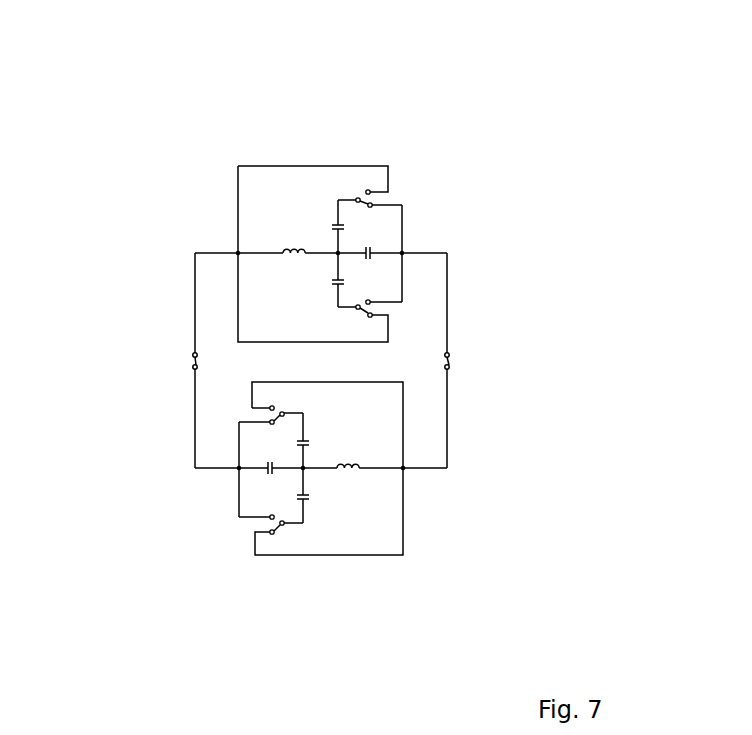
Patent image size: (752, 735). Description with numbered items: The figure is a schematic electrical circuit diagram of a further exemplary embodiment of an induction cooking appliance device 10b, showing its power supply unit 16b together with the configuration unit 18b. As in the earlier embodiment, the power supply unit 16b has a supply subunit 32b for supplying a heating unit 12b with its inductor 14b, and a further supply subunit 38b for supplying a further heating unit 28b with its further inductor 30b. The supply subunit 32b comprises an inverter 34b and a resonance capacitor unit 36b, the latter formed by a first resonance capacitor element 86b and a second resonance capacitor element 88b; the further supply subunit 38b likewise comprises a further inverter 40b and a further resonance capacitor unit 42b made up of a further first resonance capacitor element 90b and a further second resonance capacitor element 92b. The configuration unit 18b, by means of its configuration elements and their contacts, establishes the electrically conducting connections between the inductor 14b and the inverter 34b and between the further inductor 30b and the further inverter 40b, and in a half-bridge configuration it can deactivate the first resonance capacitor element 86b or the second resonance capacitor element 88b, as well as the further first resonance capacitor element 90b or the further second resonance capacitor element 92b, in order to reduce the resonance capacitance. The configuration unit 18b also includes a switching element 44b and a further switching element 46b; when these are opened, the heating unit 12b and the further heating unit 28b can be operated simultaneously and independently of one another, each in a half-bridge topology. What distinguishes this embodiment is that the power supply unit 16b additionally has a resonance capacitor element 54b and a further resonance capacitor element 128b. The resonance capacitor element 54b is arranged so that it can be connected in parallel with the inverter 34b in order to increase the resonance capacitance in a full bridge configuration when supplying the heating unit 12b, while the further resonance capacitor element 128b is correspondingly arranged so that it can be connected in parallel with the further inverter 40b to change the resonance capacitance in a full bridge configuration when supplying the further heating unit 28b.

The induction cooking appliance device 10b is at (178, 89).
The heating unit 12b is at (278, 119).
The inductor 14b is at (297, 246).
The power supply unit 16b is at (198, 178).
The configuration unit 18b is at (235, 410).
The further heating unit 28b is at (543, 372).
The further inductor 30b is at (358, 460).
The supply subunit 32b is at (47, 244).
The inverter 34b is at (230, 268).
The resonance capacitor unit 36b is at (120, 335).
The further supply subunit 38b is at (542, 489).
The further inverter 40b is at (412, 447).
The further resonance capacitor unit 42b is at (395, 638).
The switching element 44b is at (452, 357).
The further switching element 46b is at (187, 357).
The resonance capacitor element 54b is at (375, 250).
The first resonance capacitor element 86b is at (337, 233).
The second resonance capacitor element 88b is at (333, 287).
The further first resonance capacitor element 90b is at (308, 470).
The further second resonance capacitor element 92b is at (305, 447).
The further resonance capacitor element 128b is at (276, 472).